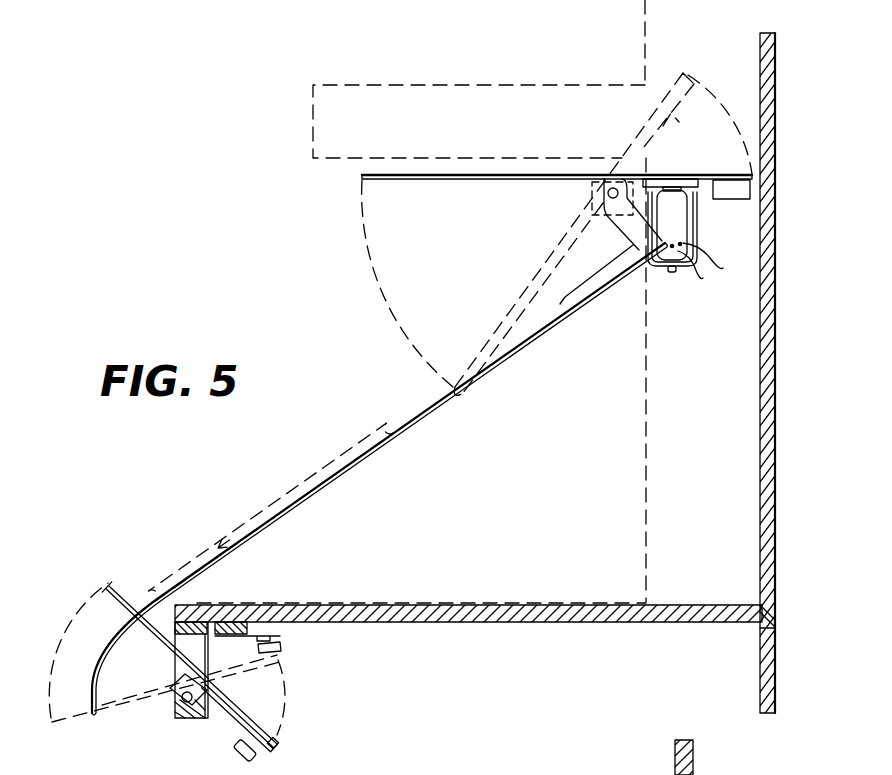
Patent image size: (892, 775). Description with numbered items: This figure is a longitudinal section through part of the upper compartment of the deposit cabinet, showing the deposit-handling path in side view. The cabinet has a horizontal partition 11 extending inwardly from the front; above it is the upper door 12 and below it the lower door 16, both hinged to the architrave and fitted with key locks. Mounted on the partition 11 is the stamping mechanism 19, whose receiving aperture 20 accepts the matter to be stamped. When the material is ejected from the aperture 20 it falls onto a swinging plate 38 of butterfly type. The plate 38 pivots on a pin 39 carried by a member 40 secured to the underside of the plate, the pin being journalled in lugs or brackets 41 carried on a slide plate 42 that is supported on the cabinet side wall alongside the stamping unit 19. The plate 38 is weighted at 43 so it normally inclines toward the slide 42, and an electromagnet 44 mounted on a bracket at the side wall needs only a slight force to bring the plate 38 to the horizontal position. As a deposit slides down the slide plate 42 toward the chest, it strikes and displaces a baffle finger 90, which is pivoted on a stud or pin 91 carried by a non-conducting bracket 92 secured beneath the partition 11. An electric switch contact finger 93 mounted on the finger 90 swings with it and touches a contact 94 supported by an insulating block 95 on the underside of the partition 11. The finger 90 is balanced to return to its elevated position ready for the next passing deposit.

The horizontal partition 11 is at (578, 622).
The door 12 is at (773, 347).
The door 16 is at (776, 657).
The stamping mechanism 19 is at (640, 42).
The receiving aperture 20 is at (318, 146).
The swinging plate 38 is at (473, 182).
The pin 39 is at (603, 195).
The member 40 is at (600, 212).
The lugs or brackets 41 is at (610, 272).
The slide plate 42 is at (560, 323).
The weight 43 is at (733, 192).
The electromagnet 44 is at (680, 226).
The baffle finger 90 is at (108, 583).
The stud or pin 91 is at (185, 704).
The bracket 92 is at (197, 652).
The electric switch contact finger 93 is at (258, 724).
The contact 94 is at (272, 632).
The insulating block 95 is at (237, 636).